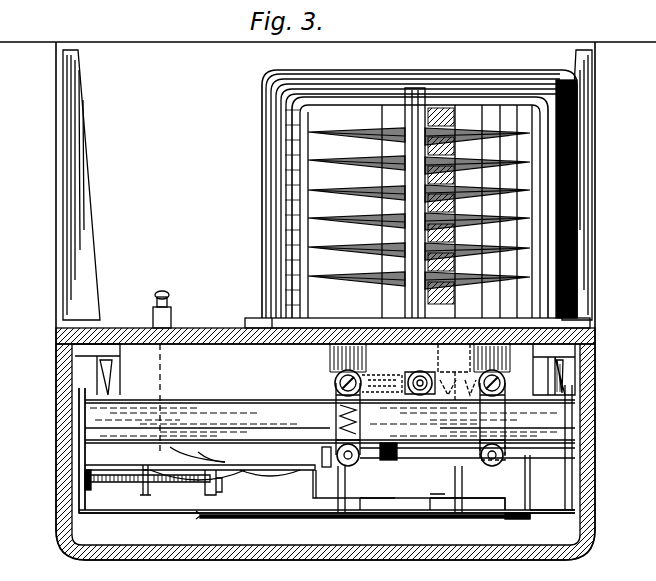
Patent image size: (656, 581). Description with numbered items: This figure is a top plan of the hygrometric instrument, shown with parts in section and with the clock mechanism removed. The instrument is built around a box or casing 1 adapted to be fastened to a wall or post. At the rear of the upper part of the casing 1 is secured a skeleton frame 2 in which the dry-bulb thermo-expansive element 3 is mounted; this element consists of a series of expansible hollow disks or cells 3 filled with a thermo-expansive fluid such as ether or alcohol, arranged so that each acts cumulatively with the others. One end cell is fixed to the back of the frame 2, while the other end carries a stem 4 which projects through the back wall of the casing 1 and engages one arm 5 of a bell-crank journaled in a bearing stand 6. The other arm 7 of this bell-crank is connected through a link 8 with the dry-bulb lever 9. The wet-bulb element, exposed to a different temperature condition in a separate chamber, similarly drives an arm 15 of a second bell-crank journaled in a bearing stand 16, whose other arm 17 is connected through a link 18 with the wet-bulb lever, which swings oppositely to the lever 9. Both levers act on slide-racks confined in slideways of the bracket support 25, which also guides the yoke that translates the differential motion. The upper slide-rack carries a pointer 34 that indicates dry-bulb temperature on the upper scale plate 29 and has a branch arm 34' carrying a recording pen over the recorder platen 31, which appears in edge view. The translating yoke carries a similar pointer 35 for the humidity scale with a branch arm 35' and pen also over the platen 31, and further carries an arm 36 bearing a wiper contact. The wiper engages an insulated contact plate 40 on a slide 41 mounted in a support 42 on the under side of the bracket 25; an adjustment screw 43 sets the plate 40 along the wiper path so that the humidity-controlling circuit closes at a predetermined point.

The casing 1 is at (598, 338).
The skeleton frame 2 is at (298, 160).
The thermo-expansive element 3 is at (528, 278).
The stem 4 is at (430, 372).
The arm of bell-crank 5 is at (384, 383).
The bearing stand 6 is at (340, 370).
The arm of bell-crank 7 is at (338, 430).
The link 8 is at (360, 462).
The lever 9 is at (388, 444).
The arm of bell-crank 15 is at (470, 392).
The bearing stand 16 is at (507, 380).
The arm of bell-crank 17 is at (500, 425).
The link 18 is at (458, 468).
The bracket support 25 is at (236, 390).
The scale plate 29 is at (552, 507).
The recorder platen 31 is at (150, 515).
The pointer 34 is at (422, 492).
The branch arm 34' is at (363, 525).
The pointer 35 is at (541, 482).
The branch arm 35' is at (499, 526).
The arm 36 is at (322, 455).
The contact plate 40 is at (300, 470).
The slide 41 is at (157, 467).
The support 42 is at (218, 494).
The adjustment screw 43 is at (117, 475).